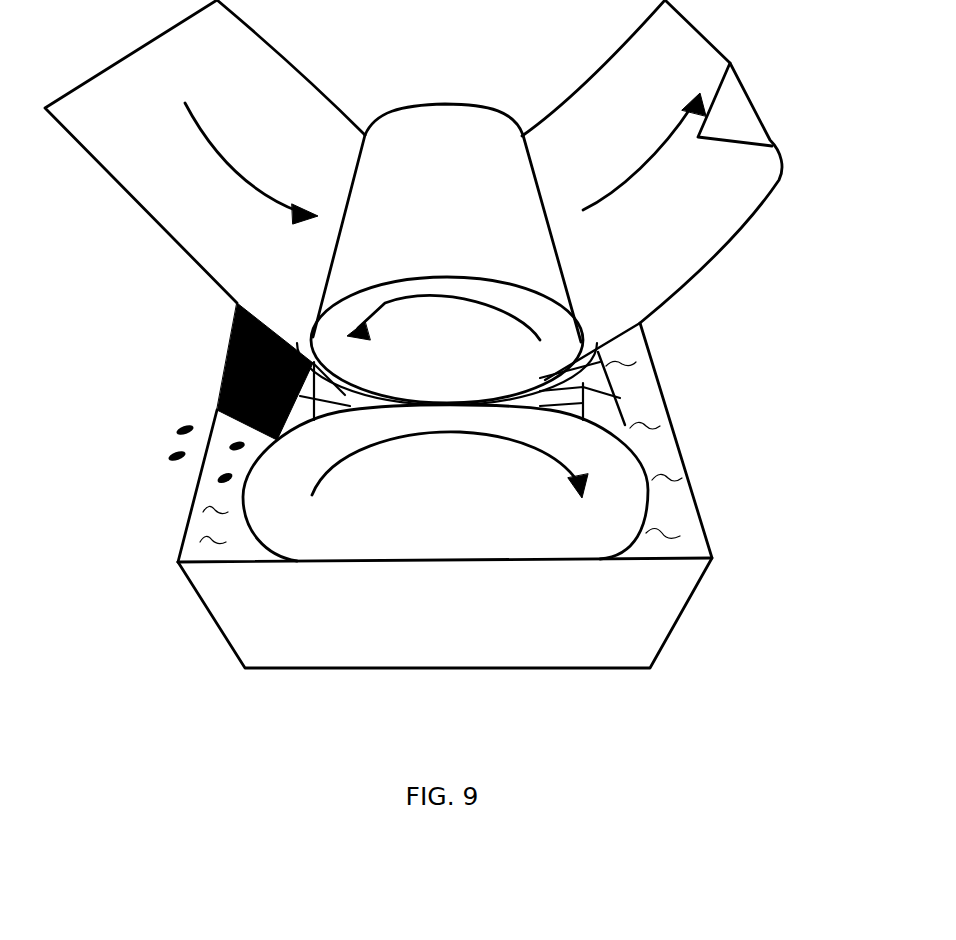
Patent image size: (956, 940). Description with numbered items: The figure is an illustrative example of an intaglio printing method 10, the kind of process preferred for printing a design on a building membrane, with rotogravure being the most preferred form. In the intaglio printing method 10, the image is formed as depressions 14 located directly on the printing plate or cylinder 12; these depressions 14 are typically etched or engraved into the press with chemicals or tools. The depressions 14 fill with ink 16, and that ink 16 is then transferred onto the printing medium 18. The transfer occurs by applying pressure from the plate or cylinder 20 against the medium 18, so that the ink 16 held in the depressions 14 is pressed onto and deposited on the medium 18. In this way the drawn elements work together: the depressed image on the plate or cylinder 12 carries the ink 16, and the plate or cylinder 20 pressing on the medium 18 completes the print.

The intaglio printing method 10 is at (178, 750).
The printing plate or cylinder 12 is at (620, 393).
The depressions 14 is at (330, 410).
The ink 16 is at (680, 528).
The printing medium 18 is at (762, 202).
The plate or cylinder 20 is at (465, 127).